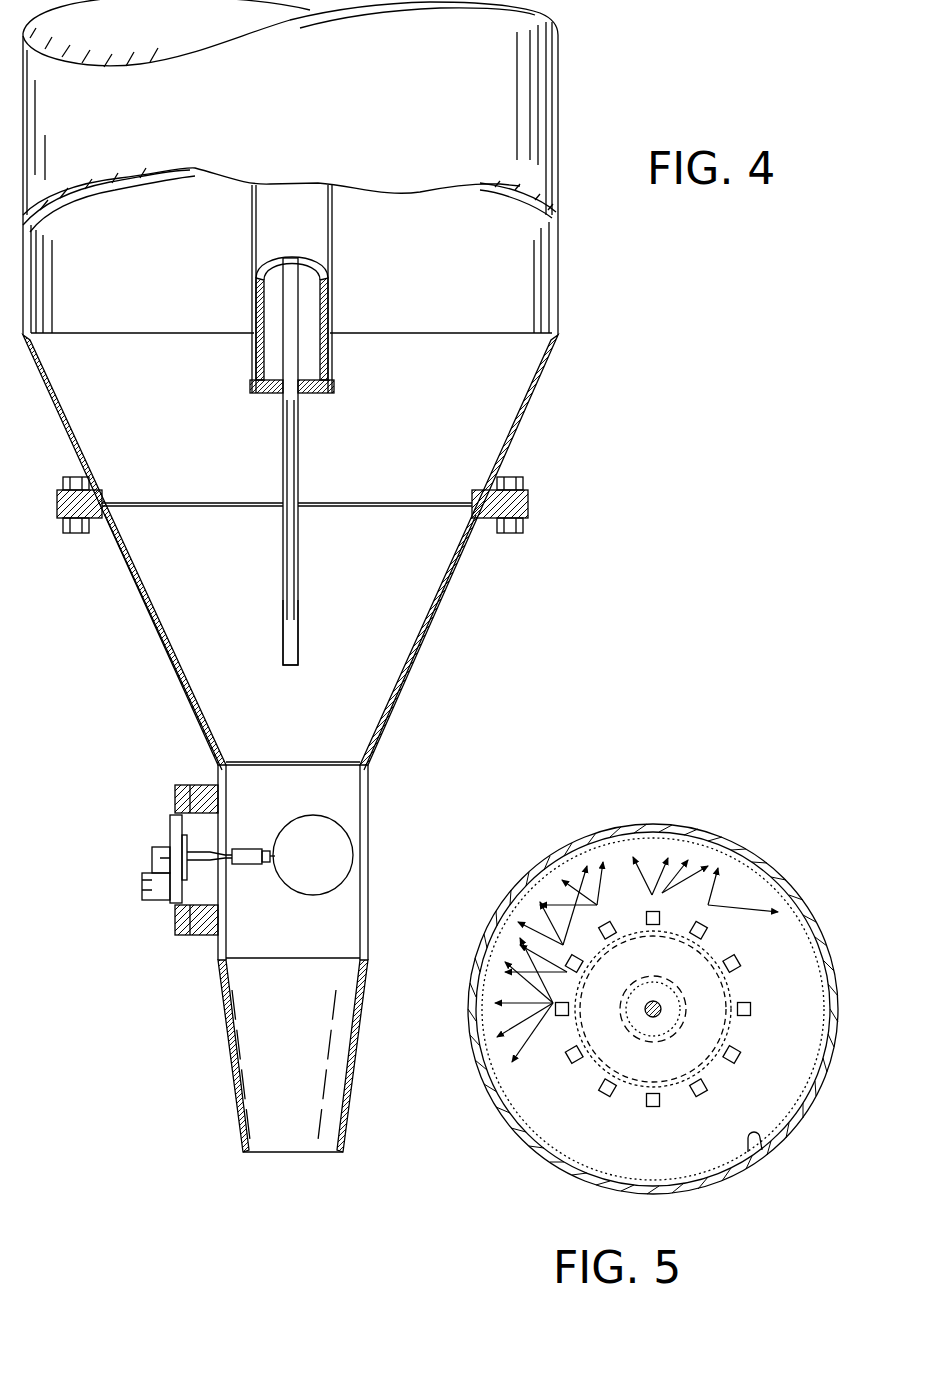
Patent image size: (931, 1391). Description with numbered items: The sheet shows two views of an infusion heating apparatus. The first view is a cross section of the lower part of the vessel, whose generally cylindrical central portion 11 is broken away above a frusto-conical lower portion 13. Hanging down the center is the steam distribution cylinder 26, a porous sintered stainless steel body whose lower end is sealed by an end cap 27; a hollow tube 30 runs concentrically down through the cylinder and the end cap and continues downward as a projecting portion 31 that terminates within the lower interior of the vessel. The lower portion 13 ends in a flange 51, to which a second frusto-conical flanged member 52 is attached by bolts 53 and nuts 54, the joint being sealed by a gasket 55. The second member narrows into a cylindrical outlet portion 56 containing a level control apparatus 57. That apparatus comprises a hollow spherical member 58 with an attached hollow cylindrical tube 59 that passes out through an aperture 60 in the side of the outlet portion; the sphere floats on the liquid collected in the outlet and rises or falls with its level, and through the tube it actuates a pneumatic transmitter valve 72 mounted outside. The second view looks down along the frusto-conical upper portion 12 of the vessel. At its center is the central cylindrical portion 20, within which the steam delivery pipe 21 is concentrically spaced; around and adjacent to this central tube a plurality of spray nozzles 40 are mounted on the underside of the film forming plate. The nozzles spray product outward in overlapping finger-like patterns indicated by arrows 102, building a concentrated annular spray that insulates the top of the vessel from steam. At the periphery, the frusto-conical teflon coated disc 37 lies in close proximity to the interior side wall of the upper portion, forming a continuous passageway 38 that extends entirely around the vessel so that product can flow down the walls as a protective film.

In FIG. 4, the generally cylindrical central portion 11 is at (508, 76).
In FIG. 4, the frusto-conical lower portion 13 is at (527, 413).
In FIG. 4, the steam distribution cylinder 26 is at (332, 297).
In FIG. 4, the end cap 27 is at (256, 393).
In FIG. 4, the hollow tube 30 is at (297, 437).
In FIG. 5, the hollow tube 30 is at (650, 1017).
In FIG. 4, the projecting portion 31 is at (298, 637).
In FIG. 4, the flange 51 is at (530, 500).
In FIG. 4, the second frusto-conical flanged member 52 is at (418, 652).
In FIG. 4, the bolts 53 is at (510, 480).
In FIG. 4, the nuts 54 is at (522, 530).
In FIG. 4, the gasket 55 is at (412, 507).
In FIG. 4, the cylindrical outlet portion 56 is at (369, 886).
In FIG. 4, the level control apparatus 57 is at (150, 782).
In FIG. 4, the hollow spherical member 58 is at (305, 875).
In FIG. 4, the hollow cylindrical tube 59 is at (272, 850).
In FIG. 4, the aperture 60 is at (205, 842).
In FIG. 4, the pneumatic transmitter valve 72 is at (150, 886).
In FIG. 5, the frusto-conical upper portion 12 is at (502, 1110).
In FIG. 5, the continuous passageway 38 is at (808, 1090).
In FIG. 5, the frusto-conical teflon coated disc 37 is at (766, 1150).
In FIG. 5, the steam delivery pipe 21 is at (670, 985).
In FIG. 5, the central cylindrical portion 20 is at (633, 1083).
In FIG. 5, the spray nozzles 40 is at (606, 1090).
In FIG. 5, the arrows 102 is at (722, 906).